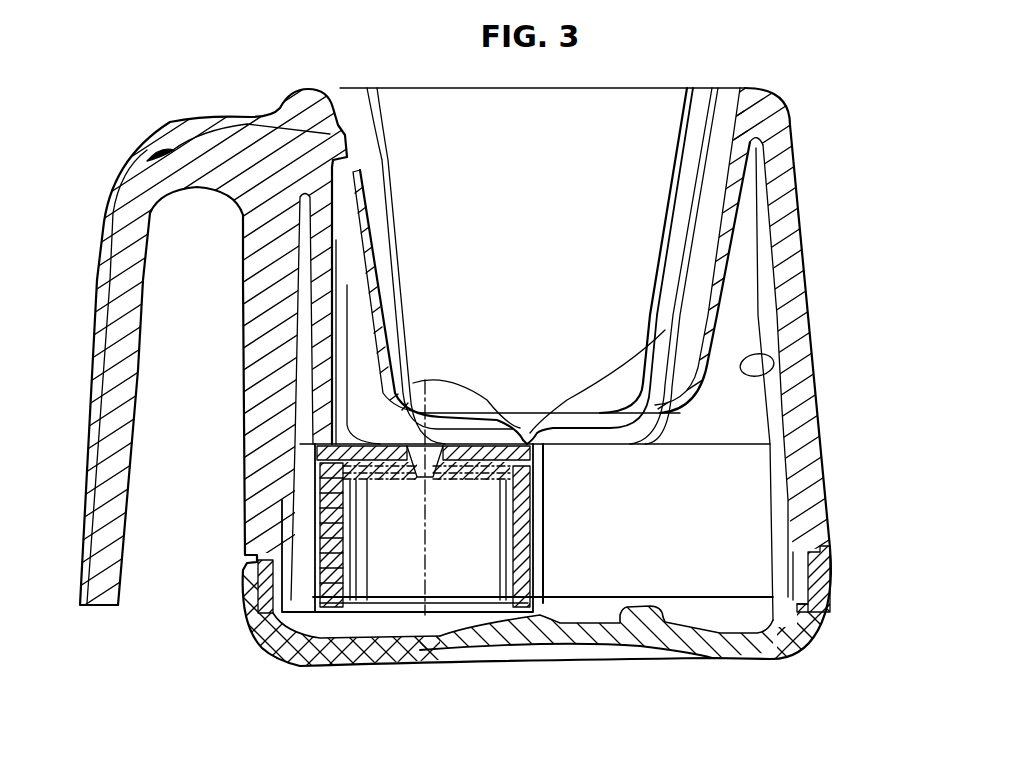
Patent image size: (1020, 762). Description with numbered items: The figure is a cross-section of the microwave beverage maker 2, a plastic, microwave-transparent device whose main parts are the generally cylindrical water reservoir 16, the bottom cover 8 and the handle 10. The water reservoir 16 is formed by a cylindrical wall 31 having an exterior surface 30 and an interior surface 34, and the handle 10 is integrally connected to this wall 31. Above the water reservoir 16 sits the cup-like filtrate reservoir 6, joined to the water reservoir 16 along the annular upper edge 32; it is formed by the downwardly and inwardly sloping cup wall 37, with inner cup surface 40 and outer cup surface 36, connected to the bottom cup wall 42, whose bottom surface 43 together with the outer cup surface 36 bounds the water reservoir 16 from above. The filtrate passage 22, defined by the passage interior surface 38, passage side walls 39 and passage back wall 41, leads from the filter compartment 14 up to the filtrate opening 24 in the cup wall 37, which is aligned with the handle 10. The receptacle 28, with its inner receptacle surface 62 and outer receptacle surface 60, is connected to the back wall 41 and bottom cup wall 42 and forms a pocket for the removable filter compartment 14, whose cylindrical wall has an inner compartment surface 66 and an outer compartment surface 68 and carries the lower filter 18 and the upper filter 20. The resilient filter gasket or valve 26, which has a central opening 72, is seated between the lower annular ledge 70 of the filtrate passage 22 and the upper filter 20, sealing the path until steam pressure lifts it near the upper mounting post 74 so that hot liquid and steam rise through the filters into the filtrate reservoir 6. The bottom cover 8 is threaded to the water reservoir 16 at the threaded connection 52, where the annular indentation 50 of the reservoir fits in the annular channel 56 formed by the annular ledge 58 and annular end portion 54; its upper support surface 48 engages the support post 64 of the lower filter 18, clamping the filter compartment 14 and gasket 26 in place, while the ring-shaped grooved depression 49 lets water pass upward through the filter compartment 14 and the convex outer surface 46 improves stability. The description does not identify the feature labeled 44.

The microwave beverage maker 2 is at (193, 103).
The filtrate reservoir 6 is at (665, 152).
The bottom cover 8 is at (820, 643).
The handle 10 is at (102, 213).
The filter compartment 14 is at (300, 665).
The water reservoir 16 is at (797, 320).
The lower filter 18 is at (293, 645).
The upper filter 20 is at (320, 505).
The filtrate passage 22 is at (345, 340).
The filtrate opening 24 is at (352, 135).
The filter gasket or valve 26 is at (330, 470).
The receptacle 28 is at (290, 572).
The exterior surface 30 is at (807, 258).
The cylindrical wall 31 is at (813, 275).
The upper edge 32 is at (785, 85).
The interior surface 34 is at (793, 345).
The outer cup surface 36 is at (745, 200).
The cup wall 37 is at (762, 233).
The passage interior surface 38 is at (393, 257).
The passage side walls 39 is at (102, 322).
The inner cup surface 40 is at (373, 192).
The passage back wall 41 is at (348, 360).
The bottom cup wall 42 is at (775, 372).
The bottom surface 43 is at (700, 428).
The handle web 44 is at (235, 276).
The convex outer surface 46 is at (583, 652).
The upper support surface 48 is at (437, 620).
The ring-shaped grooved depression 49 is at (730, 660).
The annular indentation 50 is at (827, 555).
The threaded connection 52 is at (823, 582).
The annular end portion 54 is at (837, 597).
The annular channel 56 is at (827, 600).
The annular ledge 58 is at (797, 605).
The outer receptacle surface 60 is at (547, 477).
The inner receptacle surface 62 is at (547, 507).
The support post 64 is at (410, 577).
The inner compartment surface 66 is at (503, 560).
The outer compartment surface 68 is at (528, 560).
The lower annular ledge 70 is at (320, 390).
The opening 72 is at (330, 420).
The upper mounting post 74 is at (332, 447).